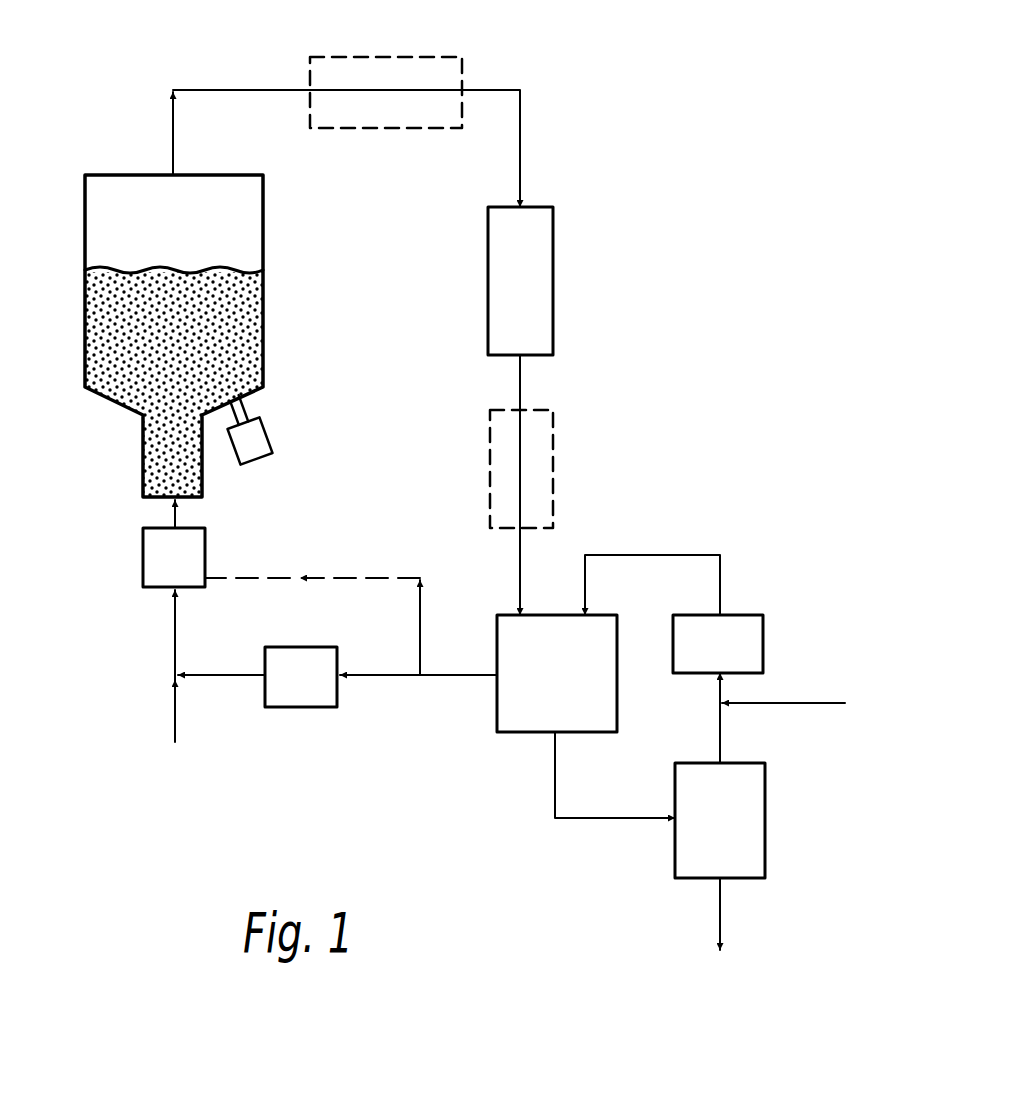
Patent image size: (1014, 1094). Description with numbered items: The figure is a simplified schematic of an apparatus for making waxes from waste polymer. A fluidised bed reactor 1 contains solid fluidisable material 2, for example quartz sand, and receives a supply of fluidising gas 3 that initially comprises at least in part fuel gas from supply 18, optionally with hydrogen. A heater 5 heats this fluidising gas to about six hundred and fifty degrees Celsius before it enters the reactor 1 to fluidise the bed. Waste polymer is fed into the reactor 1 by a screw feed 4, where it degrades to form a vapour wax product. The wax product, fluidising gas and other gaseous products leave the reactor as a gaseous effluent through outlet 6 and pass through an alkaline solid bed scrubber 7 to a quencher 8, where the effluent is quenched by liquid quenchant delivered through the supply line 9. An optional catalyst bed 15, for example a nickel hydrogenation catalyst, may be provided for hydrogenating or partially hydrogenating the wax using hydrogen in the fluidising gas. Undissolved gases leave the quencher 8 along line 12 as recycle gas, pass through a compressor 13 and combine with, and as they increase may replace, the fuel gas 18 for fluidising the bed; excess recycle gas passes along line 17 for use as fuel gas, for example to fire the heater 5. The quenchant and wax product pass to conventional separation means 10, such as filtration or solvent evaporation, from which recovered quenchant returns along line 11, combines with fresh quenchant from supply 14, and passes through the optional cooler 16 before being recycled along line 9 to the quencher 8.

The fluidised bed reactor 1 is at (143, 440).
The solid fluidisable material 2 is at (230, 340).
The supply of fluidising gas 3 is at (170, 520).
The screw feed 4 is at (262, 440).
The heater 5 is at (195, 553).
The outlet 6 is at (170, 140).
The alkaline solid bed scrubber 7 is at (540, 295).
The quencher 8 is at (543, 705).
The supply of liquid quenchant 9 is at (648, 555).
The separation means 10 is at (745, 835).
The line for recycling recovered quenchant 11 is at (722, 745).
The line 12 is at (395, 680).
The compressor 13 is at (300, 693).
The supply of fresh quenchant 14 is at (800, 703).
The catalyst bed 15 is at (385, 60).
The cooler 16 is at (730, 637).
The line 17 is at (422, 625).
The supply of fuel gas 18 is at (175, 742).